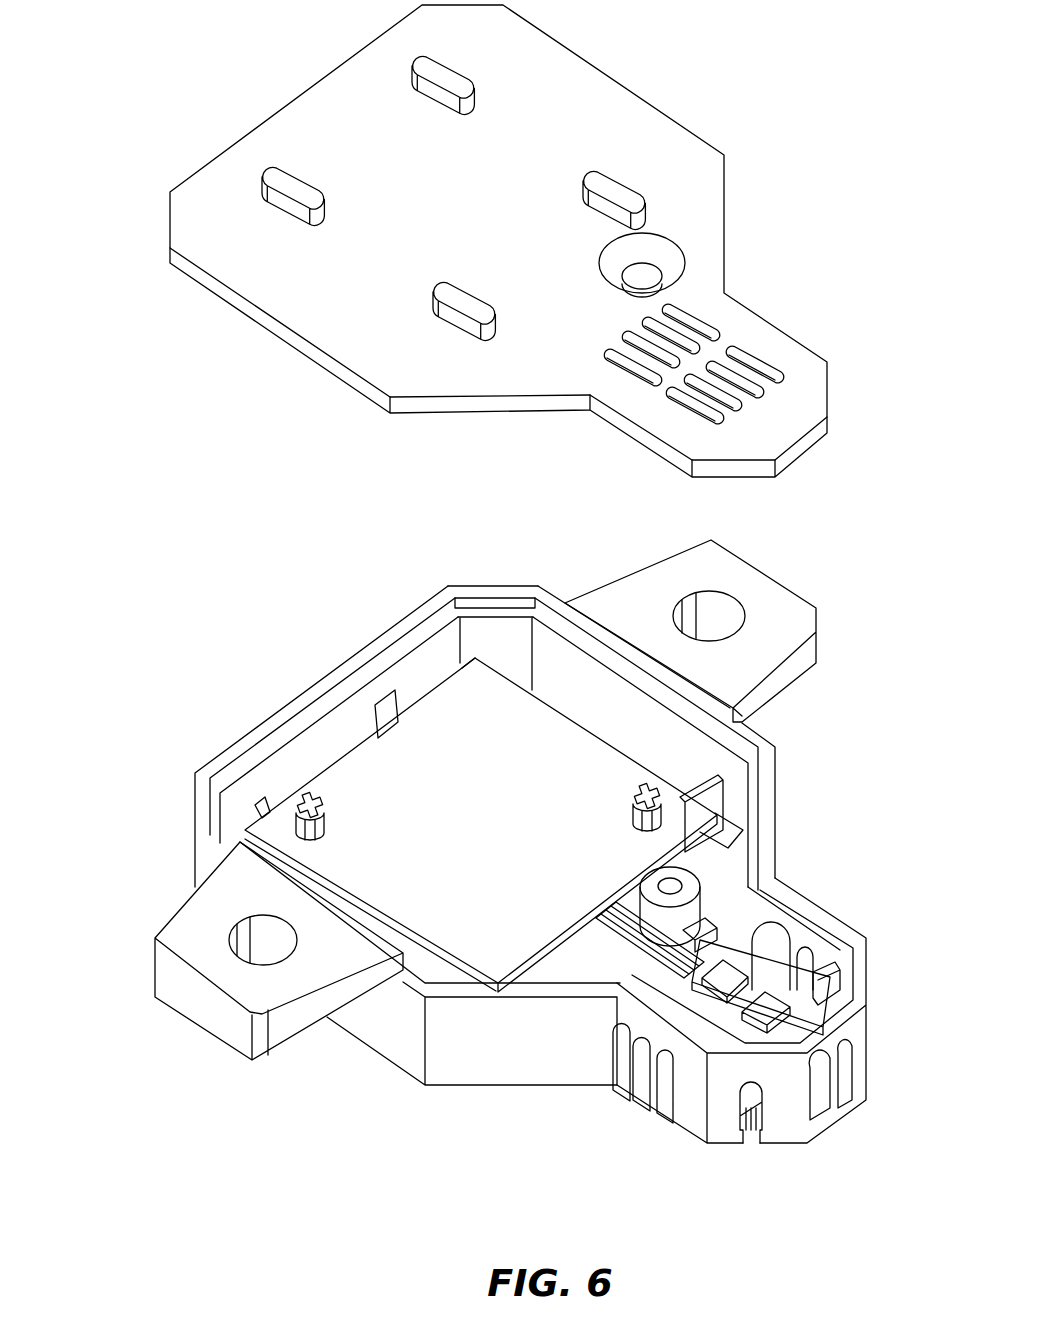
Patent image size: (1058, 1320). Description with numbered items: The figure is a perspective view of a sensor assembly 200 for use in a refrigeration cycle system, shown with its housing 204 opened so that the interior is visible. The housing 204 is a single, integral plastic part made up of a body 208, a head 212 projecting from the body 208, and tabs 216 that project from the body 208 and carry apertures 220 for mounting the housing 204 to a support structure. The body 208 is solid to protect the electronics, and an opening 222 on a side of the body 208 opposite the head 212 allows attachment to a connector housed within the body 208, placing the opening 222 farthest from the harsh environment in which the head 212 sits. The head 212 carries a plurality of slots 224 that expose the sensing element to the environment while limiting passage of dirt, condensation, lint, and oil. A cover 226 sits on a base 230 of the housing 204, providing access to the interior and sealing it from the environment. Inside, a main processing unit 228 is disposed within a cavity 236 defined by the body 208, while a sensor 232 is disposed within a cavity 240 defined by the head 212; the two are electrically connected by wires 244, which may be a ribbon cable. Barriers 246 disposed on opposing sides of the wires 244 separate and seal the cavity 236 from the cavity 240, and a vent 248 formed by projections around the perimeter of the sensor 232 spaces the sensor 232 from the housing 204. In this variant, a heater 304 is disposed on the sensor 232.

The sensor assembly 200 is at (122, 469).
The housing 204 is at (238, 596).
The body 208 is at (497, 596).
The head 212 is at (868, 938).
The tabs 216 is at (765, 575).
The apertures 220 is at (258, 947).
The opening 222 is at (338, 740).
The slots 224 is at (668, 1120).
The cover 226 is at (637, 110).
The main processing unit 228 is at (475, 945).
The base 230 is at (195, 805).
The sensor 232 is at (812, 1068).
The cavity 236 is at (468, 655).
The cavity 240 is at (840, 975).
The wires 244 is at (597, 912).
The barriers 246 is at (628, 1022).
The vent 248 is at (797, 953).
The heater 304 is at (722, 973).